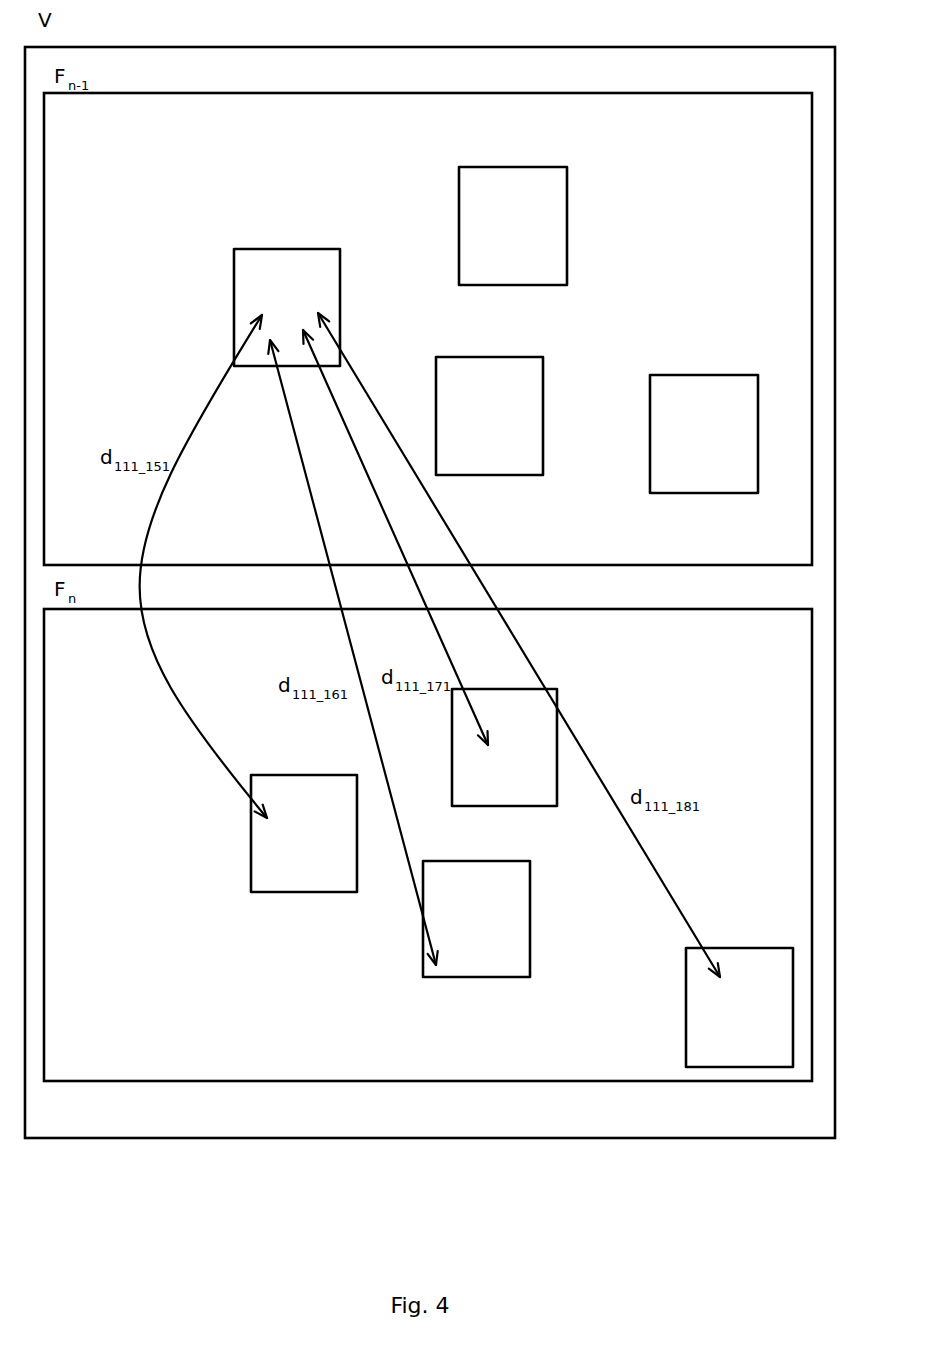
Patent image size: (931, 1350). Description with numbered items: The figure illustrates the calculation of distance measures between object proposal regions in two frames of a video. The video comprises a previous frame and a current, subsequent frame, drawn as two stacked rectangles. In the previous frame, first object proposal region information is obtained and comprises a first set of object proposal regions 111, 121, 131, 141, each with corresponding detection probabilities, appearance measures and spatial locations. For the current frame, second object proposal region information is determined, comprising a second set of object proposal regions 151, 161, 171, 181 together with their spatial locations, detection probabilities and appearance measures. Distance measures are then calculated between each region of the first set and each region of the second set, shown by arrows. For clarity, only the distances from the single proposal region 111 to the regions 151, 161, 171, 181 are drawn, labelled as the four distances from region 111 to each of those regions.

The object proposal region 111 is at (234, 262).
The object proposal region 121 is at (487, 478).
The object proposal region 131 is at (570, 257).
The object proposal region 141 is at (703, 372).
The object proposal region 151 is at (345, 895).
The object proposal region 161 is at (478, 978).
The object proposal region 171 is at (558, 697).
The object proposal region 181 is at (738, 946).